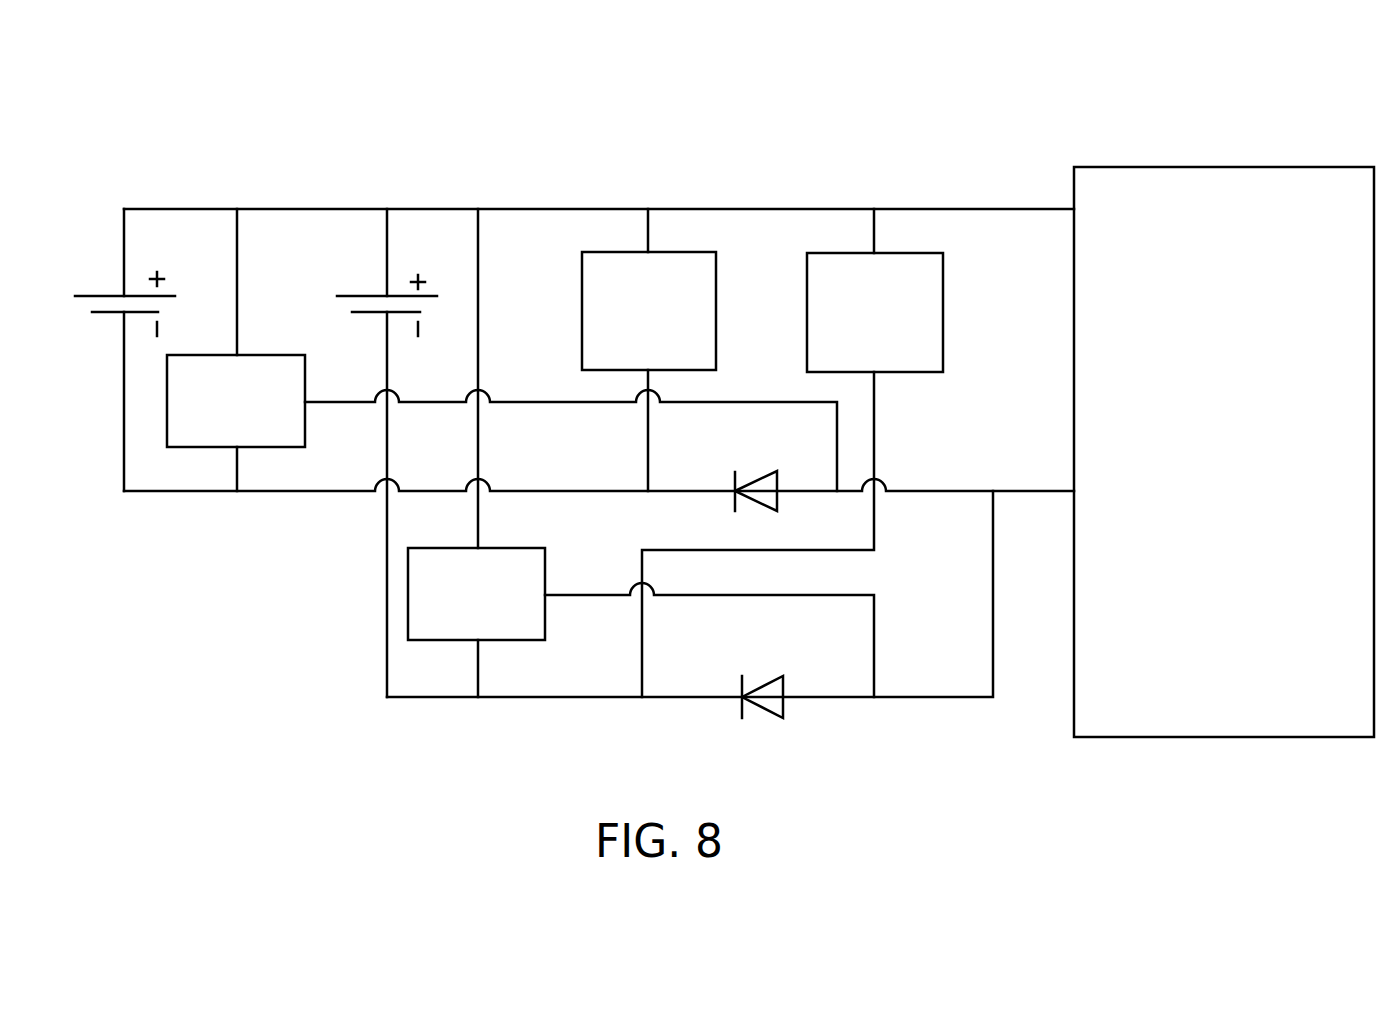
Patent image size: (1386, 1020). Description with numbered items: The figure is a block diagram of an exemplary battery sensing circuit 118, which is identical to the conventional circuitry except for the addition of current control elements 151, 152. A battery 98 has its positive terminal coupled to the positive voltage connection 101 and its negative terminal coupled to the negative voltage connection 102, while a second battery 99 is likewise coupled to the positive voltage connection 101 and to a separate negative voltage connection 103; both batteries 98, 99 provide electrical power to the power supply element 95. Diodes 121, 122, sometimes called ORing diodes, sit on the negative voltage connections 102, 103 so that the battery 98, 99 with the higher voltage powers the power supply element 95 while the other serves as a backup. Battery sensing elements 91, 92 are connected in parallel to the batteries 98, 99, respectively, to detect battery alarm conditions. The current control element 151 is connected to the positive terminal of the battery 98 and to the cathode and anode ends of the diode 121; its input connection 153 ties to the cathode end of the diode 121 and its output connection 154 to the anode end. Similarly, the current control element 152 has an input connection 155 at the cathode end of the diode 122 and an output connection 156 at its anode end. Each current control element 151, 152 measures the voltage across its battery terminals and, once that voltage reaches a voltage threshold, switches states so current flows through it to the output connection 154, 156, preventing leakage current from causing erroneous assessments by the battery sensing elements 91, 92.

The battery sensing circuit 118 is at (552, 80).
The battery 98 is at (125, 255).
The battery 99 is at (387, 240).
The battery sensing element 91 is at (605, 252).
The battery sensing element 92 is at (906, 253).
The power supply element 95 is at (1173, 167).
The positive voltage connection 101 is at (757, 209).
The negative voltage connection 102 is at (513, 491).
The negative voltage connection 103 is at (542, 697).
The current control element 151 is at (258, 355).
The current control element 152 is at (515, 548).
The input connection 153 is at (237, 472).
The output connection 154 is at (317, 402).
The input connection 155 is at (478, 673).
The output connection 156 is at (563, 598).
The diode 121 is at (740, 488).
The diode 122 is at (768, 675).